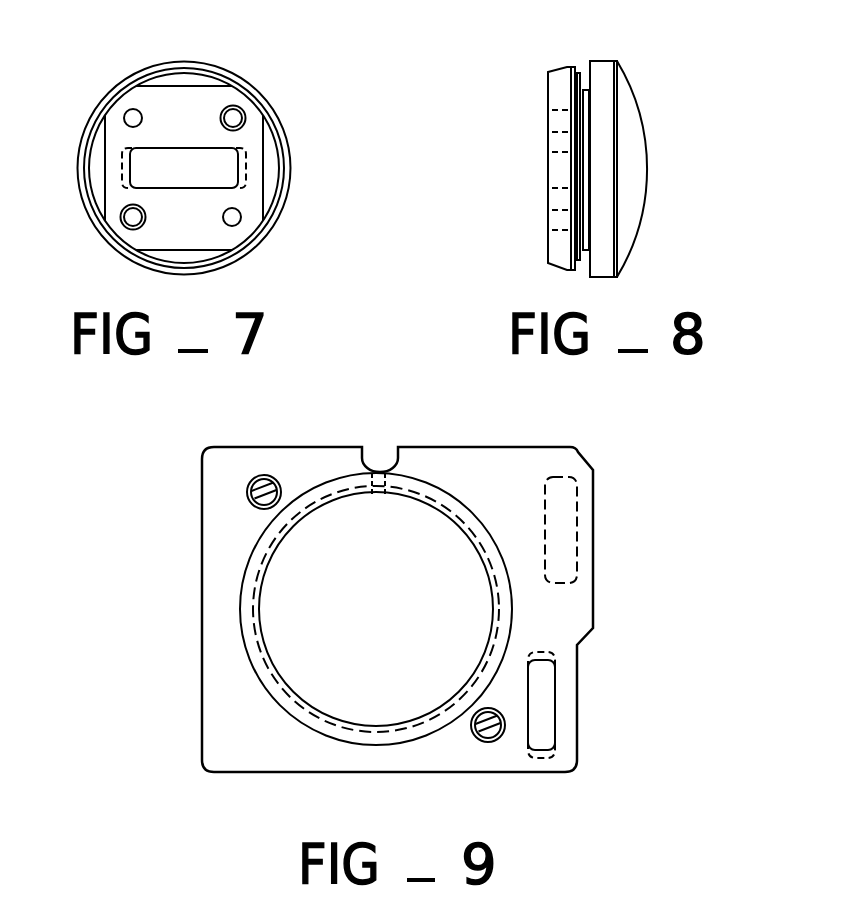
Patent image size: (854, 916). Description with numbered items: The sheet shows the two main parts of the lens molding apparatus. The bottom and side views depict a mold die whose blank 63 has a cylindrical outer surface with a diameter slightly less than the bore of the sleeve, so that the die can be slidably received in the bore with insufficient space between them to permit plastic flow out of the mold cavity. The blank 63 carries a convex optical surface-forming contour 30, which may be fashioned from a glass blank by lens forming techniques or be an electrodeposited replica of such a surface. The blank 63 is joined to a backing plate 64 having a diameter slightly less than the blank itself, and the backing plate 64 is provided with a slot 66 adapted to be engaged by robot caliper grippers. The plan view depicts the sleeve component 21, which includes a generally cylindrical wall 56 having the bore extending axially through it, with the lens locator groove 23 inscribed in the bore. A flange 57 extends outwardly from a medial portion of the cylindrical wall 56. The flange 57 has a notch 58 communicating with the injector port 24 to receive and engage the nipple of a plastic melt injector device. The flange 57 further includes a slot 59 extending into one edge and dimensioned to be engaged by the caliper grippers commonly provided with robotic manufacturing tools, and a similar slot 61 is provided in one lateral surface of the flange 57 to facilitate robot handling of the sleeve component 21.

In FIG. 9, the sleeve component 21 is at (374, 579).
In FIG. 9, the lens locator groove 23 is at (266, 563).
In FIG. 9, the injector port 24 is at (377, 493).
In FIG. 8, the convex optical surface-forming contour 30 is at (637, 163).
In FIG. 9, the cylindrical wall 56 is at (242, 631).
In FIG. 9, the flange 57 is at (202, 710).
In FIG. 9, the notch 58 is at (395, 467).
In FIG. 9, the slot 59 is at (577, 517).
In FIG. 9, the slot 61 is at (547, 700).
In FIG. 7, the blank 63 is at (191, 58).
In FIG. 8, the blank 63 is at (605, 70).
In FIG. 7, the backing plate 64 is at (172, 113).
In FIG. 8, the backing plate 64 is at (562, 93).
In FIG. 7, the slot 66 is at (150, 164).